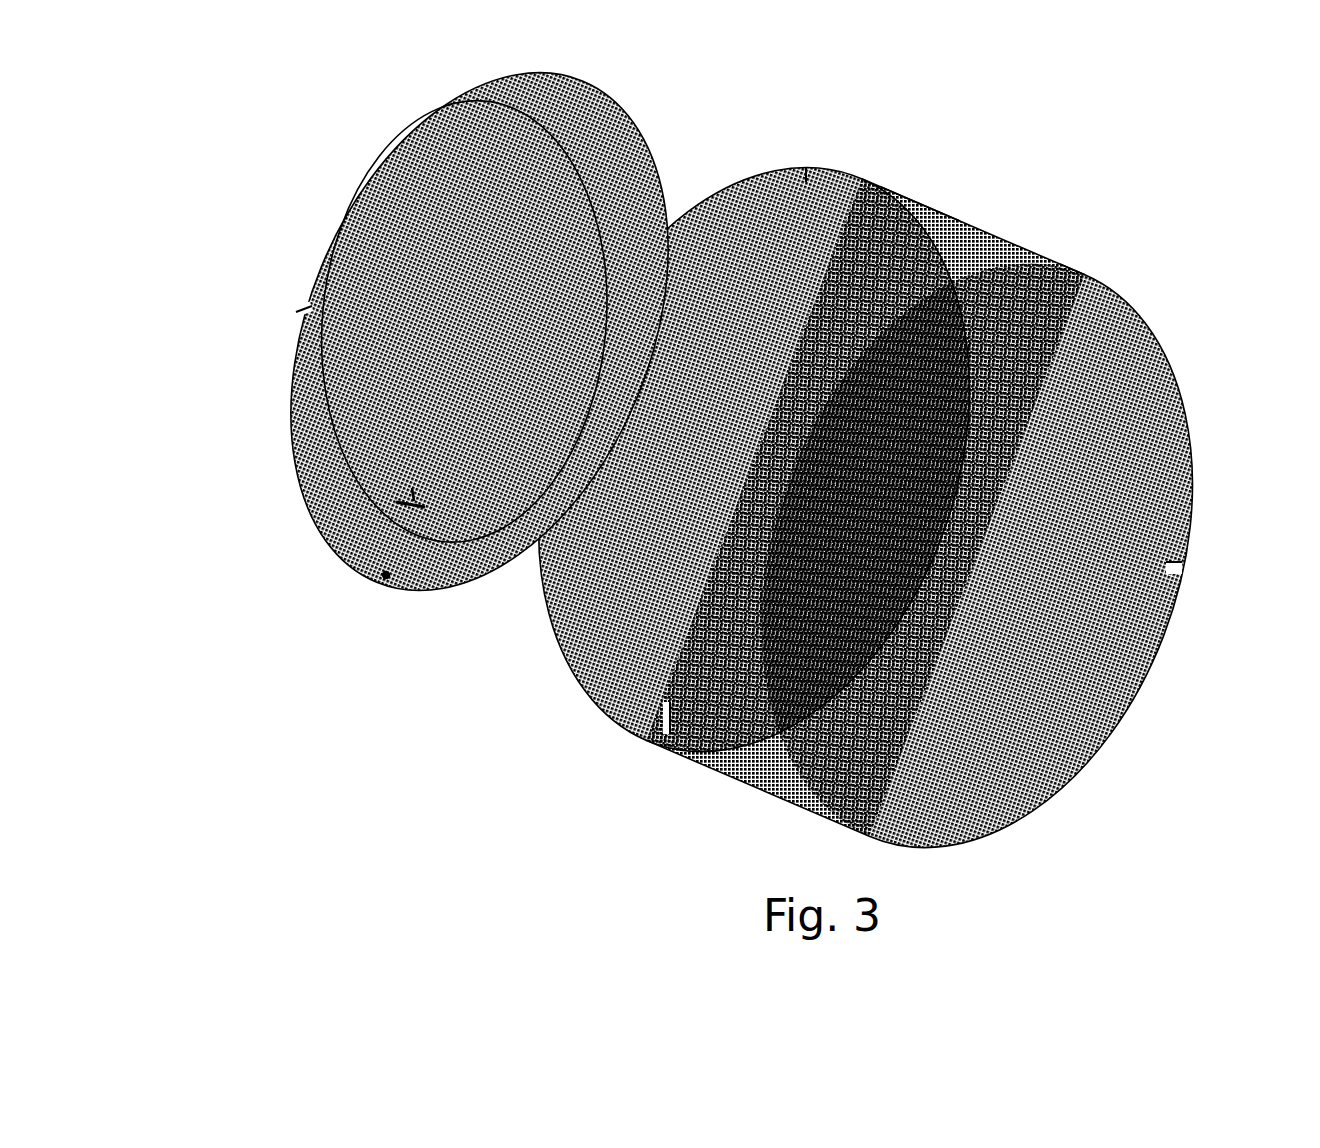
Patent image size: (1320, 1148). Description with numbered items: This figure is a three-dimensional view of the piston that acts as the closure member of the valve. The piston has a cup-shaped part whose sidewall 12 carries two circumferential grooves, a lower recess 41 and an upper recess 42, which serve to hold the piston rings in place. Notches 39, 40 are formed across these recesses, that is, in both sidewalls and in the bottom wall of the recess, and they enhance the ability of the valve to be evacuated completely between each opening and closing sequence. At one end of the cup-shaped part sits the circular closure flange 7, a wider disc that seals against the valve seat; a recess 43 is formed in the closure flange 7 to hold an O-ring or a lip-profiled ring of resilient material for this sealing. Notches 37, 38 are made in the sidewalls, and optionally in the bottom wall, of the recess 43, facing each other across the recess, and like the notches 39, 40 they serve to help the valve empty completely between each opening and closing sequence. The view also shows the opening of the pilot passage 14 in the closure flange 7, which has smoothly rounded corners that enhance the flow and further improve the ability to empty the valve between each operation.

The circular closure flange 7 is at (349, 401).
The sidewall 12 is at (1018, 237).
The pilot passage 14 is at (480, 307).
The notch 37 is at (385, 575).
The notch 38 is at (399, 512).
The notch 39 is at (662, 733).
The notch 40 is at (1178, 584).
The lower recess 41 is at (912, 185).
The upper recess 42 is at (1127, 297).
The recess 43 is at (324, 302).